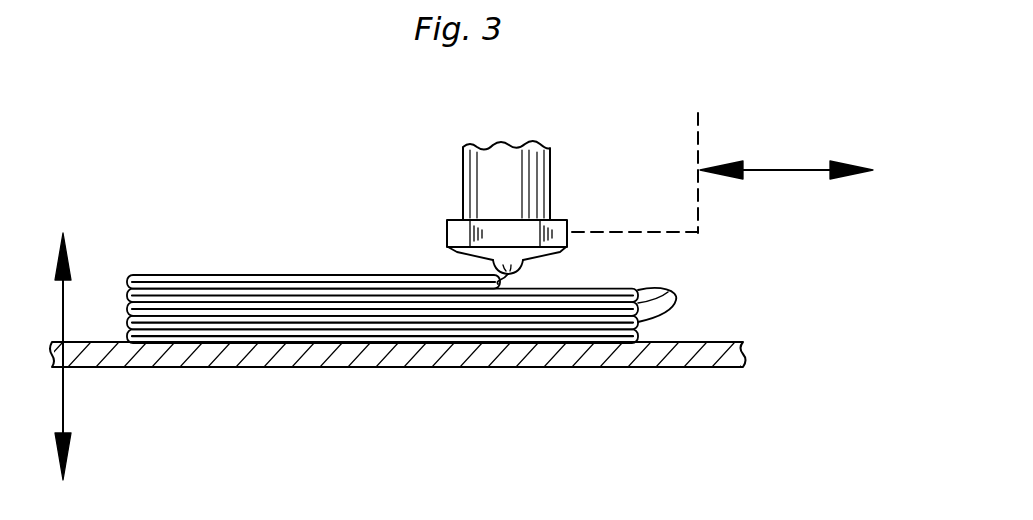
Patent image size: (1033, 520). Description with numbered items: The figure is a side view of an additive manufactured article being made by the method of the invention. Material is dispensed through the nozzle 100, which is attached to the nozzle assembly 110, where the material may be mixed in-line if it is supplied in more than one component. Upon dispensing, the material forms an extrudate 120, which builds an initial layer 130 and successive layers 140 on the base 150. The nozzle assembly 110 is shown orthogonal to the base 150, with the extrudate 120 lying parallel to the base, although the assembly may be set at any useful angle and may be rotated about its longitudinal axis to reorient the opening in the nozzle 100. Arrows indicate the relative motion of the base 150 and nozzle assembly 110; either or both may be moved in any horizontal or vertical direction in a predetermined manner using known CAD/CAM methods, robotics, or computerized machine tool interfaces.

The nozzle 100 is at (520, 272).
The nozzle assembly 110 is at (552, 160).
The extrudate 120 is at (150, 272).
The initial layer 130 is at (397, 332).
The successive layers 140 is at (662, 289).
The base 150 is at (737, 342).